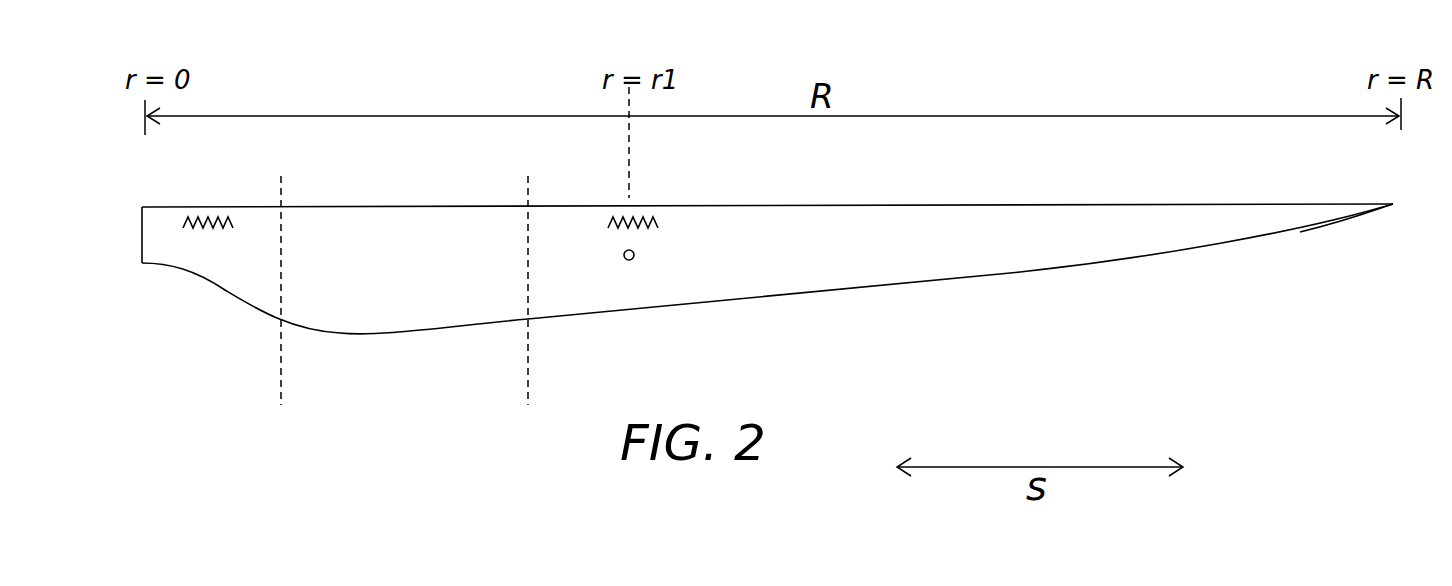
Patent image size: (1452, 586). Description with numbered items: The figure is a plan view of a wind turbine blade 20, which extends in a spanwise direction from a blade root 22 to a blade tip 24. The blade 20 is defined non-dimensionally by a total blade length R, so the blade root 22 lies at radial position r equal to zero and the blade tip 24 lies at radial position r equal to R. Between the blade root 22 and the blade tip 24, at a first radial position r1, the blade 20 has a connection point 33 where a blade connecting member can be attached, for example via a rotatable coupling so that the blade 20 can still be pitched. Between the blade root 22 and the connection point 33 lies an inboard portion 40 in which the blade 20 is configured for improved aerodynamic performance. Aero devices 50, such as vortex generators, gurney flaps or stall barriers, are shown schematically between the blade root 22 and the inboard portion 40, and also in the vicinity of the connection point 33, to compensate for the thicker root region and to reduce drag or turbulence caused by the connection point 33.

The wind turbine blade 20 is at (852, 313).
The blade root 22 is at (142, 240).
The blade tip 24 is at (1393, 205).
The connection point 33 is at (634, 255).
The inboard portion 40 is at (526, 377).
The aero devices 50 is at (216, 195).